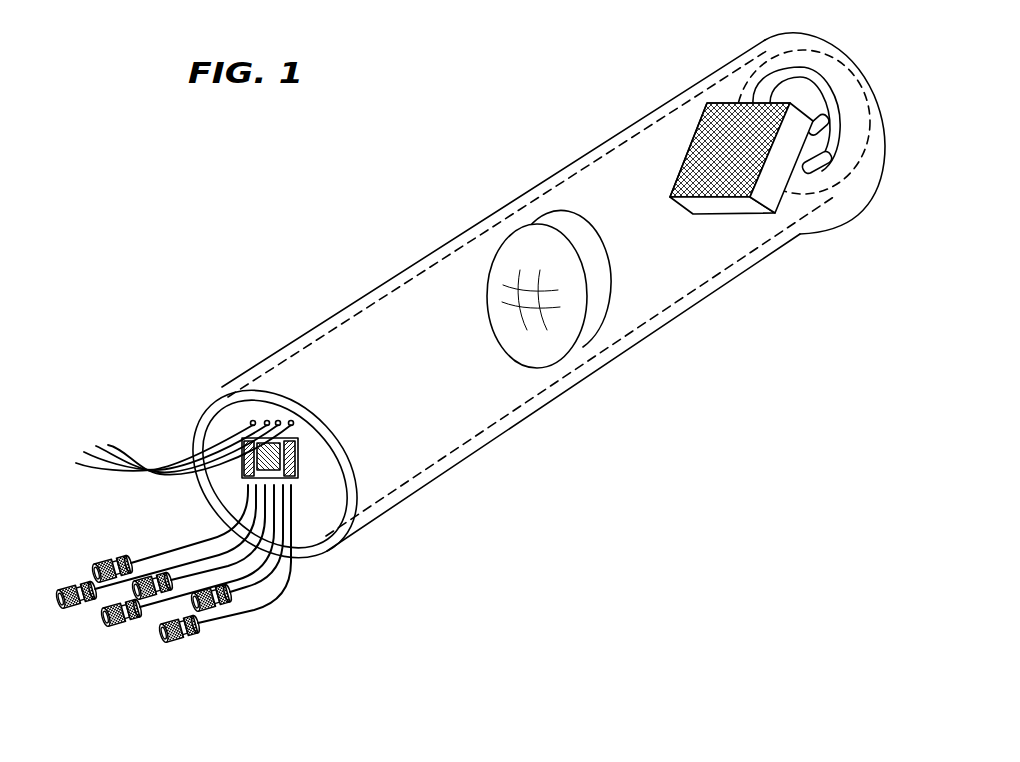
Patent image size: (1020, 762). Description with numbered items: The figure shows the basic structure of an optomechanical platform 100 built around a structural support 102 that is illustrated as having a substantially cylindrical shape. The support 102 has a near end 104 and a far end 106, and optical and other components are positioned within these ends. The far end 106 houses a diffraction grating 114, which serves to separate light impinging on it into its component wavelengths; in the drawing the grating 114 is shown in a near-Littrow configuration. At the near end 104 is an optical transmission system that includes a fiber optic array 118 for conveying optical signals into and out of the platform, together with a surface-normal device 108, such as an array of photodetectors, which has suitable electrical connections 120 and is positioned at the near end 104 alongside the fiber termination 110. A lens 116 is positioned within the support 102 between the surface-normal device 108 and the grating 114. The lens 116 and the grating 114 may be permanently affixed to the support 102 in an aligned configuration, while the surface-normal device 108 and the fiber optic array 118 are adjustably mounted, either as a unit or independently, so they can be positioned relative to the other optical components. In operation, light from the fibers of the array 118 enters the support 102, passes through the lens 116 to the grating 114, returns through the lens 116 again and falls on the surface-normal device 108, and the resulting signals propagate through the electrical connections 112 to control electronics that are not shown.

The spectrometer module 100 is at (246, 134).
The structural support 102 is at (422, 258).
The near end 104 is at (236, 410).
The far end 106 is at (847, 82).
The surface-normal device 108 is at (305, 463).
The fiber array termination 110 is at (270, 418).
The electrical connections 112 is at (230, 610).
The diffraction grating 114 is at (733, 217).
The lens 116 is at (577, 349).
The fiber optic array 118 is at (104, 478).
The electrical connections 120 is at (280, 578).